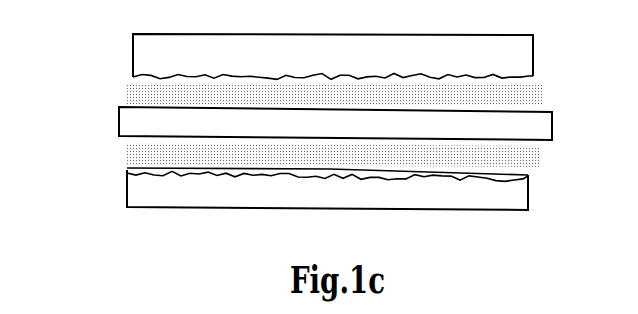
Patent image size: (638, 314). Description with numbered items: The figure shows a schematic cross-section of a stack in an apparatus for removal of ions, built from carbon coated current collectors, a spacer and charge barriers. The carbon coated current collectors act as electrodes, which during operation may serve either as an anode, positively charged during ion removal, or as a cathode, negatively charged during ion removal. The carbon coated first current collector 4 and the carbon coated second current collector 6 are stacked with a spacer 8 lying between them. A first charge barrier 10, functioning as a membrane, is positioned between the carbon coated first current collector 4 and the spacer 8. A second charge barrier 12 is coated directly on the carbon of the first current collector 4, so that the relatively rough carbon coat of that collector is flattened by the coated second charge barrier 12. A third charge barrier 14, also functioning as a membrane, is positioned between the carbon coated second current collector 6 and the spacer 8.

The carbon coated first current collector 4 is at (127, 190).
The carbon coated second current collector 6 is at (132, 49).
The spacer 8 is at (118, 121).
The first charge barrier 10 is at (126, 152).
The second charge barrier 12 is at (126, 168).
The third charge barrier 14 is at (127, 89).